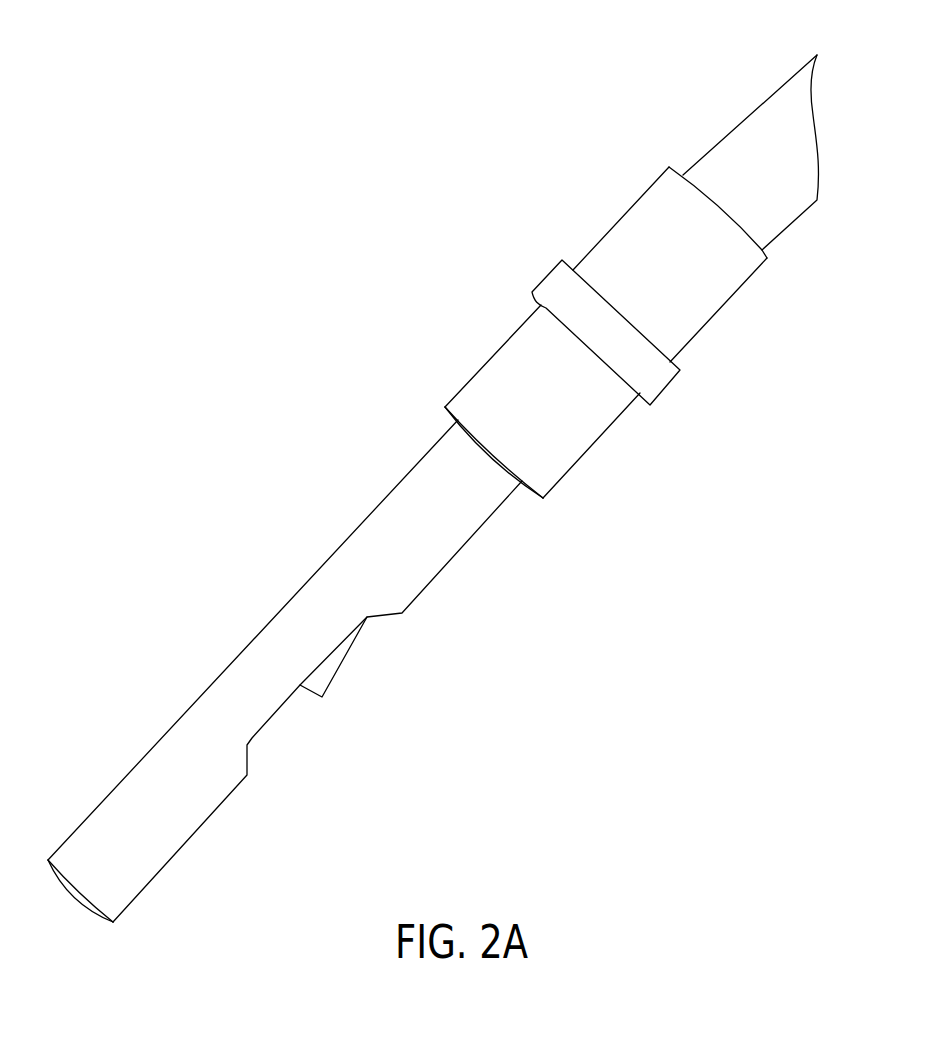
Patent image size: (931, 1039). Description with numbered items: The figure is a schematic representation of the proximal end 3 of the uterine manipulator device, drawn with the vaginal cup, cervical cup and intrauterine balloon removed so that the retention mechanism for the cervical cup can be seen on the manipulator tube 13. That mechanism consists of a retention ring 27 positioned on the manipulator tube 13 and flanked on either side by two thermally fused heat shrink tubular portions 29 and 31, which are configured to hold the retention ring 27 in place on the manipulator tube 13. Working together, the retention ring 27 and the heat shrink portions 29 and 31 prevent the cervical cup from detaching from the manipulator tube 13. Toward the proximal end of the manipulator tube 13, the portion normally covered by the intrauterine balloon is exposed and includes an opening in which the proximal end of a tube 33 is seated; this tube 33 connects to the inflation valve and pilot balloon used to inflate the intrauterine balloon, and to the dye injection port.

The proximal end 3 is at (186, 651).
The manipulator tube 13 is at (718, 120).
The retention ring 27 is at (518, 252).
The heat shrink tubular portion 29 is at (745, 308).
The heat shrink tubular portion 31 is at (590, 453).
The tube 33 is at (358, 678).